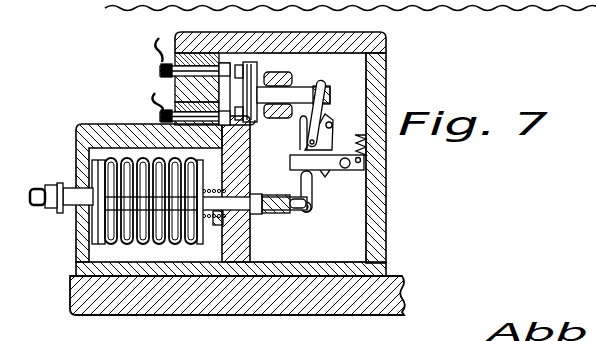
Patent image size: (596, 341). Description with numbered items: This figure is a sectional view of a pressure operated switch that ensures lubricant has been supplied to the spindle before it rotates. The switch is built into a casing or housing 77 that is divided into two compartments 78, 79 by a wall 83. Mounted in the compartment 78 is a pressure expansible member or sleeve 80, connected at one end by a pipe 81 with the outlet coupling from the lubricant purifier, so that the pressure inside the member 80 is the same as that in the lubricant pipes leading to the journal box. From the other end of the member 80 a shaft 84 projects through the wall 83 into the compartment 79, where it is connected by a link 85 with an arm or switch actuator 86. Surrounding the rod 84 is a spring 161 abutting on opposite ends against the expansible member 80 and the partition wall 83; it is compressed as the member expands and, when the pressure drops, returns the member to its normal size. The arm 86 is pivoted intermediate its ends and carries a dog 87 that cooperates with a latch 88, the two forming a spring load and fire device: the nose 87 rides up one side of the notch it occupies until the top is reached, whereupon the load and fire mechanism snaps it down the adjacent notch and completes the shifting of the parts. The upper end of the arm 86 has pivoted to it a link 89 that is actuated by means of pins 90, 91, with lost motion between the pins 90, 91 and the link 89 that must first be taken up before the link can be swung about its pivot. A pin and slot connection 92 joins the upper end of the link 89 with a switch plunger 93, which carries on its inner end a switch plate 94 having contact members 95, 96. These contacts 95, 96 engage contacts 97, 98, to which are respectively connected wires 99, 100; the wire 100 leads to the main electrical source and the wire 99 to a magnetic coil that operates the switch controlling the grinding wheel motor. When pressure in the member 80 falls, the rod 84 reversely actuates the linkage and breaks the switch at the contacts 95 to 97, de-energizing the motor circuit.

The casing or housing 77 is at (386, 87).
The compartment 78 is at (205, 252).
The compartment 79 is at (355, 239).
The pressure expansible member or sleeve 80 is at (105, 240).
The pipe 81 is at (42, 186).
The wall 83 is at (243, 247).
The shaft 84 is at (283, 197).
The link 85 is at (294, 209).
The arm or switch actuator 86 is at (309, 208).
The dog 87 is at (311, 192).
The latch 88 is at (290, 161).
The link 89 is at (324, 112).
The pin 90 is at (308, 128).
The pin 91 is at (334, 125).
The pin and slot connection 92 is at (330, 96).
The switch plunger 93 is at (299, 92).
The switch plate 94 is at (270, 66).
The contact member 95 is at (249, 62).
The contact member 96 is at (246, 125).
The contact 97 is at (226, 62).
The contact 98 is at (230, 67).
The wire 99 is at (157, 37).
The wire 100 is at (156, 105).
The spring 161 is at (230, 176).